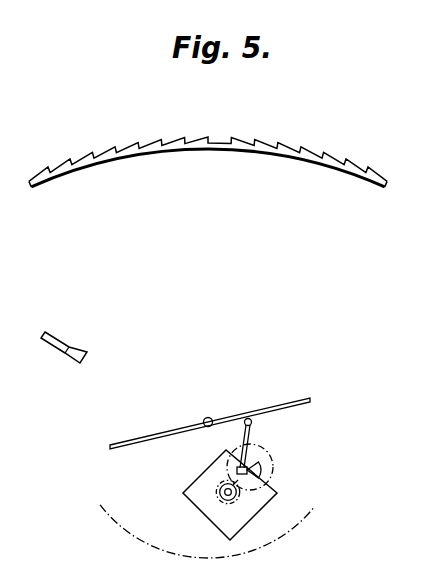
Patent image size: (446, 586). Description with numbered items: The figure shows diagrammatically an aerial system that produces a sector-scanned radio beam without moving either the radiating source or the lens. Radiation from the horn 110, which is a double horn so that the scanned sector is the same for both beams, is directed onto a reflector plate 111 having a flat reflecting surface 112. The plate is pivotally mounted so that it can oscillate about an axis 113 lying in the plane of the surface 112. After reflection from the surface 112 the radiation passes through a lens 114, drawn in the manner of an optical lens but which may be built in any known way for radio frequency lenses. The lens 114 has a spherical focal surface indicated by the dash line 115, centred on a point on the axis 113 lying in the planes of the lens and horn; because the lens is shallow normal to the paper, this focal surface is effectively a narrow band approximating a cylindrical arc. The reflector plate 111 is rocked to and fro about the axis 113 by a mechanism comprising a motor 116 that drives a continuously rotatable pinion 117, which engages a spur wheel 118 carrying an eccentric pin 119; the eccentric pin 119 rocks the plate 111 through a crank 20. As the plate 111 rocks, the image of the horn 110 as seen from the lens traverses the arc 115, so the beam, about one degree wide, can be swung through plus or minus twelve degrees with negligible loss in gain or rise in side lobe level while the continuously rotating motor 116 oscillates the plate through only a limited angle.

The lens 114 is at (205, 139).
The horn 110 is at (56, 342).
The reflector plate 111 is at (298, 404).
The flat reflecting surface 112 is at (247, 418).
The axis 113 is at (205, 418).
The connecting rod 20 is at (250, 436).
The spur wheel 118 is at (274, 471).
The eccentric pin 119 is at (237, 465).
The pinion 117 is at (218, 490).
The motor 116 is at (248, 510).
The spherical focal surface 115 is at (122, 529).